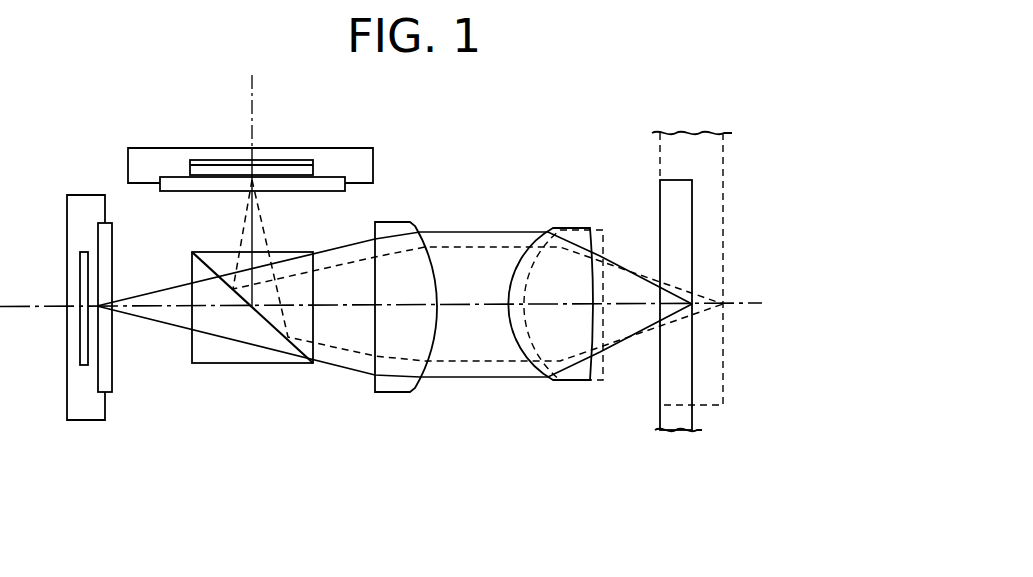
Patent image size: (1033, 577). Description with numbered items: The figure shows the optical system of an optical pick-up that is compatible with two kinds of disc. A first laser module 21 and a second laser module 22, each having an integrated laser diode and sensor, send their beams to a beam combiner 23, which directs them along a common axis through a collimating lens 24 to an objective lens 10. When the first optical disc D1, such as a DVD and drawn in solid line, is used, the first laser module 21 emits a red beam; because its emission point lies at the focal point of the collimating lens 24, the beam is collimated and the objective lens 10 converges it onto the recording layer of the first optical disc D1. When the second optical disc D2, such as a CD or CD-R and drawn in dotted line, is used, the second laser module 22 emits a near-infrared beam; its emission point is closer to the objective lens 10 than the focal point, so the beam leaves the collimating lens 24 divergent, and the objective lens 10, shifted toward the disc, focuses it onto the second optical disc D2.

The first laser module 21 is at (88, 420).
The second laser module 22 is at (365, 165).
The beam combiner 23 is at (253, 365).
The collimating lens 24 is at (395, 385).
The objective lens 10 is at (572, 385).
The first optical disc D1 is at (690, 420).
The second optical disc D2 is at (703, 162).